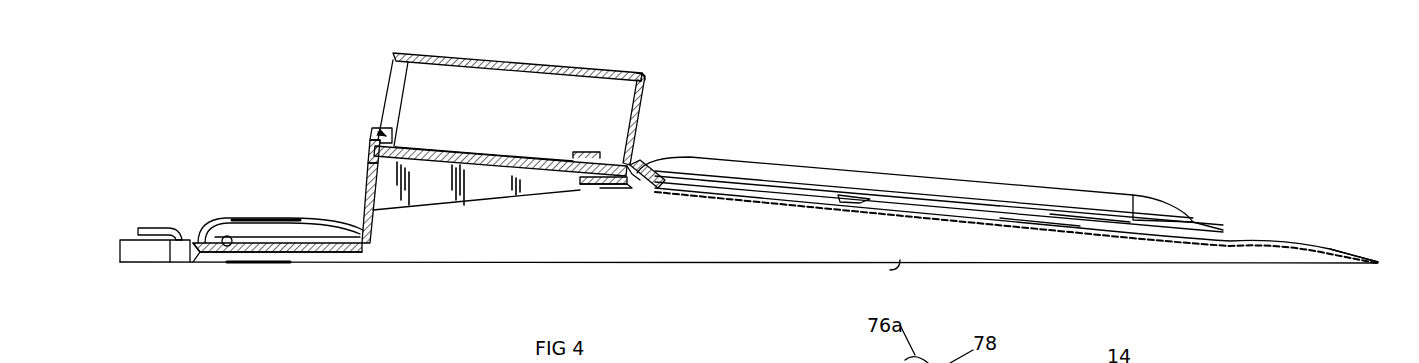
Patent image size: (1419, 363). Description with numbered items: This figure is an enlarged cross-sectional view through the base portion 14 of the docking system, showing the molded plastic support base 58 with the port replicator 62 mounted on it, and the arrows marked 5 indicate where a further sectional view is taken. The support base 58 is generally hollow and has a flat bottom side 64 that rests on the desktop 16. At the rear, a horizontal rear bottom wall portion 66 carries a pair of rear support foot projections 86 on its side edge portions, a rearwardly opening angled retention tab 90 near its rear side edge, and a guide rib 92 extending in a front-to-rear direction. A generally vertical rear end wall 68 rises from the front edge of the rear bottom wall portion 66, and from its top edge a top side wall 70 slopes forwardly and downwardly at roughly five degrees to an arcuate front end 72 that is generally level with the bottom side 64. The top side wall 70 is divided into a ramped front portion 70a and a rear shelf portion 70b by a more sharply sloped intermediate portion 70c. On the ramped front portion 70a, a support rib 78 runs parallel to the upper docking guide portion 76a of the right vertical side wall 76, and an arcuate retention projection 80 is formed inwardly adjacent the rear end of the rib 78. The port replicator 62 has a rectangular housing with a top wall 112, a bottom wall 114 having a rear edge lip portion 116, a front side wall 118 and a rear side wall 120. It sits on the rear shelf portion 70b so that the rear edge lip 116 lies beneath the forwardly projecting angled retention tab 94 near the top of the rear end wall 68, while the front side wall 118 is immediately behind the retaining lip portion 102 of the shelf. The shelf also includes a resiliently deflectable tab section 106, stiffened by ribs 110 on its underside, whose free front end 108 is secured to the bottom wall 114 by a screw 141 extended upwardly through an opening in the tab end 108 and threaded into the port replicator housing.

The section line 5- 5 is at (480, 97).
The base portion 14 is at (767, 82).
The desktop 16 is at (890, 270).
The support base 58 is at (993, 175).
The port replicator 62 is at (650, 80).
The bottom side 64 is at (1000, 265).
The rear bottom wall portion 66 is at (232, 243).
The rear end wall 68 is at (367, 212).
The top side wall 70 is at (927, 220).
The ramped front portion 70a is at (1017, 220).
The rear shelf portion 70b is at (628, 187).
The intermediate portion 70c is at (690, 190).
The arcuate front end 72 is at (1375, 260).
The right vertical side wall 76 is at (767, 246).
The upper docking guide portion 76a is at (933, 188).
The support rib 78 is at (1073, 213).
The arcuate retention projection 80 is at (850, 197).
The rear support foot projection 86 is at (267, 215).
The angled retention tab 90 is at (162, 227).
The guide rib 92 is at (322, 233).
The angled retention tab 94 is at (372, 132).
The retaining lip portion 102 is at (638, 170).
The resiliently deflectable tab section 106 is at (418, 142).
The free front end 108 is at (580, 186).
The stiffening ribs 110 is at (433, 190).
The top wall 112 is at (510, 62).
The bottom wall 114 is at (470, 147).
The rear edge lip portion 116 is at (369, 151).
The front side wall 118 is at (643, 102).
The rear side wall 120 is at (402, 98).
The screw 141 is at (598, 188).